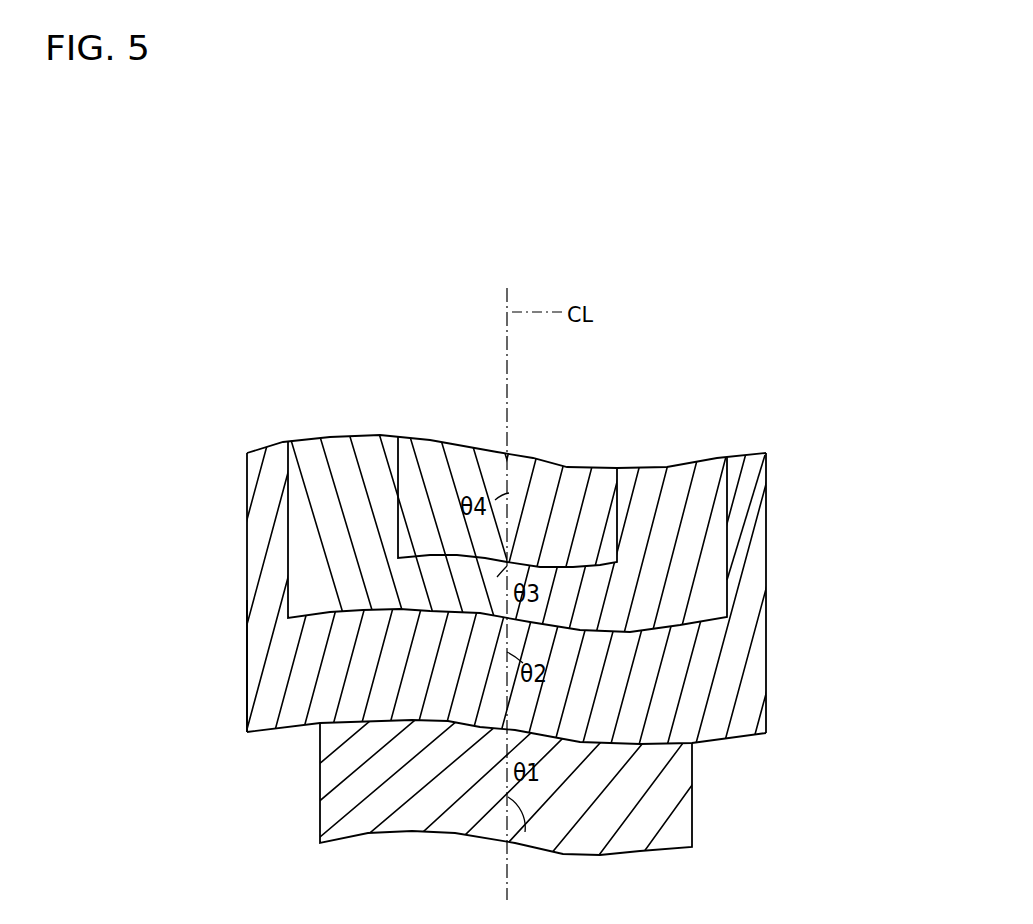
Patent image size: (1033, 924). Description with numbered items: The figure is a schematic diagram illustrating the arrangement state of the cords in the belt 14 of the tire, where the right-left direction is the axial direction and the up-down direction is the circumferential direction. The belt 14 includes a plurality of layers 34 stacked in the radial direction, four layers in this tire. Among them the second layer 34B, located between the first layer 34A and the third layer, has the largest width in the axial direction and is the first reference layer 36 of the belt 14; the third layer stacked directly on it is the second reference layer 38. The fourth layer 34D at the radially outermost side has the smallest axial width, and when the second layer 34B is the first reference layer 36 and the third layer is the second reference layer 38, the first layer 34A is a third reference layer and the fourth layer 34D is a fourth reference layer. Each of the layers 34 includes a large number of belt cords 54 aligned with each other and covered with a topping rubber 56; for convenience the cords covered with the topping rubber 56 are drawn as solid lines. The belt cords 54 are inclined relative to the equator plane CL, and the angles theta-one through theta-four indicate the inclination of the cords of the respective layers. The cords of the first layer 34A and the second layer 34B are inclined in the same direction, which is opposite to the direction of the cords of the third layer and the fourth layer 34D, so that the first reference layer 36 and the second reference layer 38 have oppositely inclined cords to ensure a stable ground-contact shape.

The belt 14 is at (756, 404).
The layer 34 is at (617, 480).
The first layer 34A is at (548, 797).
The second layer 34B is at (551, 738).
The fourth layer 34D is at (567, 503).
The first reference layer 36 is at (547, 690).
The second reference layer 38 is at (617, 501).
The belt cord 54 is at (470, 466).
The topping rubber 56 is at (337, 455).